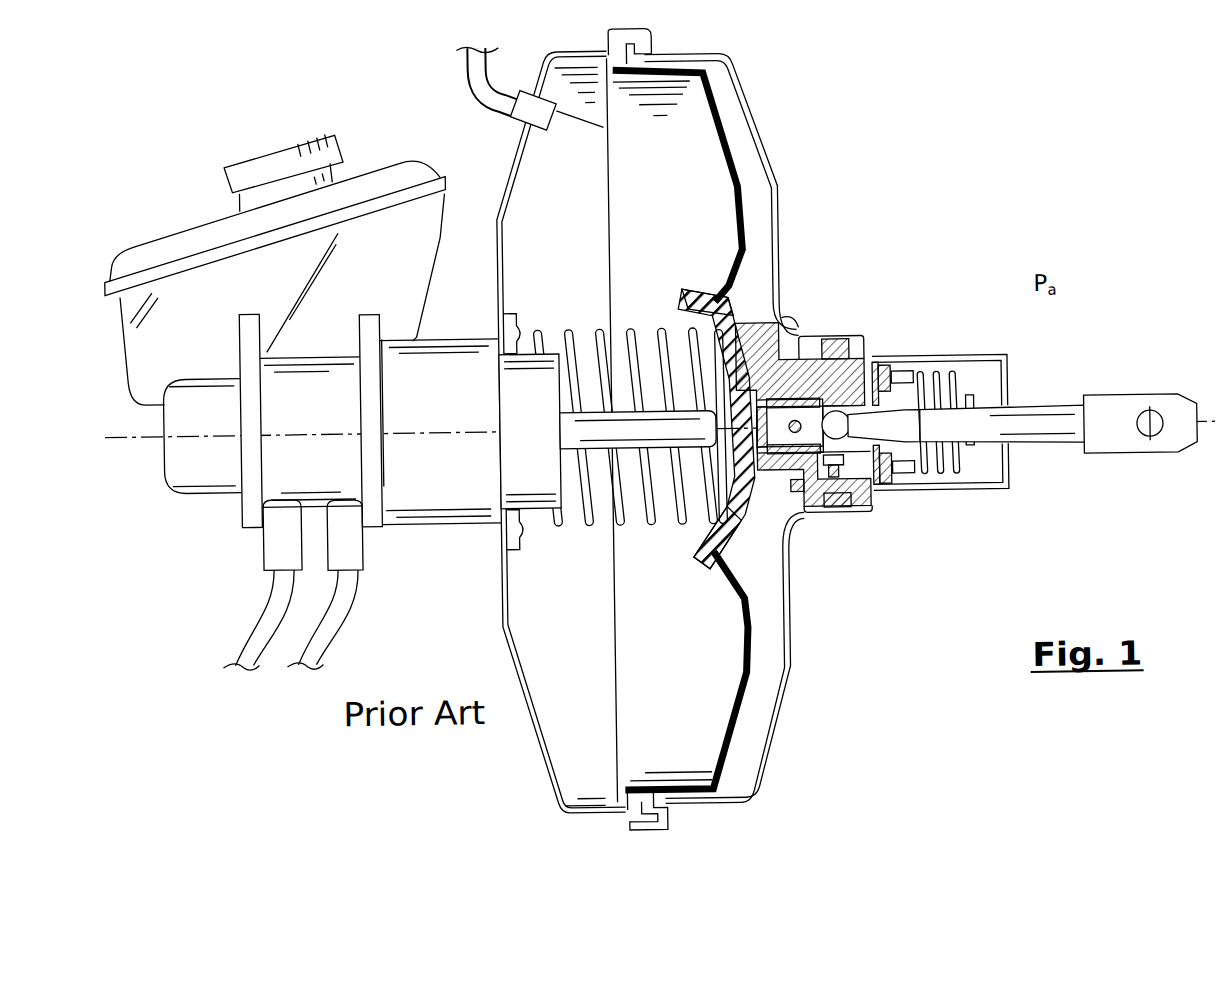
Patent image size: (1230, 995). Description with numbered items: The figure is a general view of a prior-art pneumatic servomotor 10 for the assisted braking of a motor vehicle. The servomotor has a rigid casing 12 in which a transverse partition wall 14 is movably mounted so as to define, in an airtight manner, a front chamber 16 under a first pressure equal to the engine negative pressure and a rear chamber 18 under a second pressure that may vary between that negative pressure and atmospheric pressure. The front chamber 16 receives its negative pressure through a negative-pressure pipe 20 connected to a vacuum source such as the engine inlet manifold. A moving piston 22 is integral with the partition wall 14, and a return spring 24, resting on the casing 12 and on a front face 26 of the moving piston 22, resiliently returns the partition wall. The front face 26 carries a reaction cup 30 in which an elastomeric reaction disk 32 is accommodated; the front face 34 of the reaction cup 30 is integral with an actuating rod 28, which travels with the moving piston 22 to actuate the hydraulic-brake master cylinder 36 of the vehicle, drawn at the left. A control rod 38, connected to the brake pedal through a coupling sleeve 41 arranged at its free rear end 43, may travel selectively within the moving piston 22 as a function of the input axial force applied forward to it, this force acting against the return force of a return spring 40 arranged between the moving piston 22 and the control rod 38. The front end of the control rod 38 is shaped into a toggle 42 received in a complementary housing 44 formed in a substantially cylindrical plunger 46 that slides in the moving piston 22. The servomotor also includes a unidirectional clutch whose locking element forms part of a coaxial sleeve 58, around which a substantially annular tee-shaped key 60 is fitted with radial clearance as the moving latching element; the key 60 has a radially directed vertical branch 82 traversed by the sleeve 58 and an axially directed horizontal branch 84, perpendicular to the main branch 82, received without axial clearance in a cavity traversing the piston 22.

The pneumatic servomotor 10 is at (946, 200).
The rigid casing 12 is at (784, 237).
The transverse partition wall 14 is at (744, 150).
The front chamber 16 is at (649, 429).
The rear chamber 18 is at (768, 597).
The negative-pressure pipe 20 is at (477, 73).
The moving piston 22 is at (810, 360).
The return spring 24 is at (596, 511).
The front face 26 is at (798, 322).
The actuating rod 28 is at (580, 430).
The reaction cup 30 is at (735, 400).
The reaction disk 32 is at (721, 382).
The front face 34 is at (727, 452).
The hydraulic-brake master cylinder 36 is at (293, 450).
The control rod 38 is at (1072, 453).
The return spring 40 is at (951, 475).
The coupling sleeve 41 is at (1110, 408).
The toggle 42 is at (932, 412).
The free rear end 43 is at (1058, 420).
The housing 44 is at (934, 366).
The plunger 46 is at (878, 502).
The coaxial sleeve 58 is at (869, 513).
The key 60 is at (808, 490).
The vertical branch 82 is at (800, 492).
The horizontal branch 84 is at (851, 340).